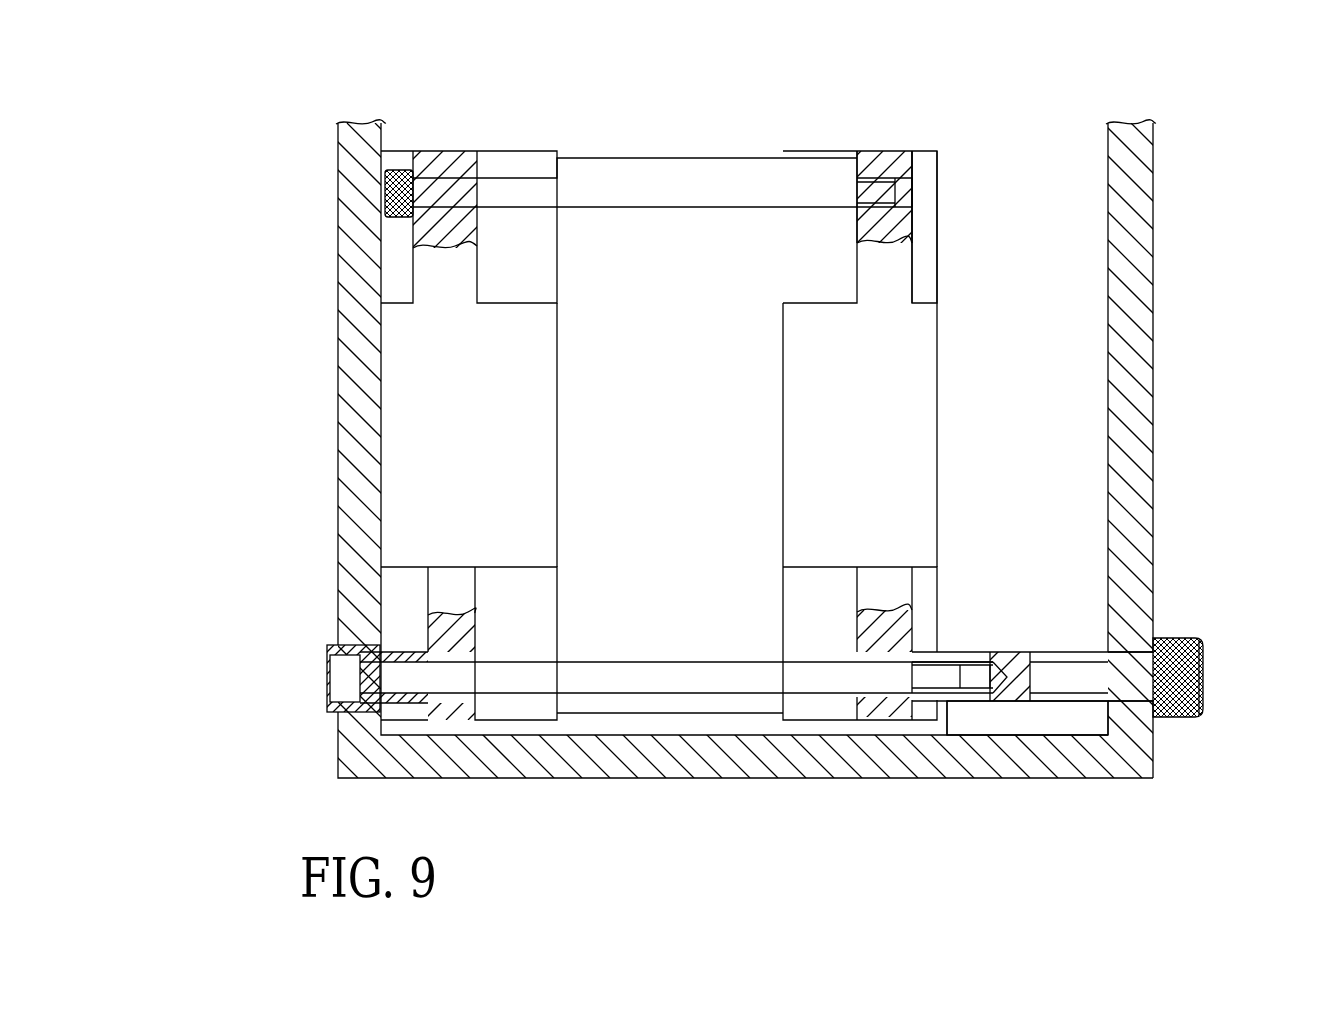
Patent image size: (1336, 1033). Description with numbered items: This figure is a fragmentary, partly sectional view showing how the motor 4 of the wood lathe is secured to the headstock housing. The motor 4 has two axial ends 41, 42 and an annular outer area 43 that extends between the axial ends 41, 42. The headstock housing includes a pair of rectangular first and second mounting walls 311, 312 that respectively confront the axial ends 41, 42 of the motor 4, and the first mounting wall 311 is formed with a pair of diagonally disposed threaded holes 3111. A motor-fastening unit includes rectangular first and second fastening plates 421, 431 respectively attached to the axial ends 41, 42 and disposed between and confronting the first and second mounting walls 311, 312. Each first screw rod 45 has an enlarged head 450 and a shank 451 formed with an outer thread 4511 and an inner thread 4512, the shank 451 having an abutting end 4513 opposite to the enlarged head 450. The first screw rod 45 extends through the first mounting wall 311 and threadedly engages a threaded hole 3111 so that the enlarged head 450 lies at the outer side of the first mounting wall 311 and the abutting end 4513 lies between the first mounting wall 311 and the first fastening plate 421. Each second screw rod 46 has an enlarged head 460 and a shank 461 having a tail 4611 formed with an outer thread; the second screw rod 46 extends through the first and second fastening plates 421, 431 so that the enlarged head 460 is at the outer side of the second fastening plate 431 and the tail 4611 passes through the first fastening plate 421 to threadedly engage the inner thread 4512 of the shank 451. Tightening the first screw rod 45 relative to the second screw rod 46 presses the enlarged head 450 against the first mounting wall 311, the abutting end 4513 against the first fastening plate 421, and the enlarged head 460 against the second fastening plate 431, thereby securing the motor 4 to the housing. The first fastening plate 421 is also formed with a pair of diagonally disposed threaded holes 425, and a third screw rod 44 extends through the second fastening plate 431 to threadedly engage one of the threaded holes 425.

The motor 4 is at (786, 370).
The axial end 41 is at (850, 287).
The axial end 42 is at (475, 290).
The annular outer area 43 is at (618, 638).
The third screw rod 44 is at (651, 186).
The first screw rod 45 is at (1092, 652).
The second screw rod 46 is at (668, 695).
The first mounting wall 311 is at (1150, 203).
The second mounting wall 312 is at (347, 156).
The threaded hole 3111 is at (1133, 652).
The first fastening plate 421 is at (888, 151).
The threaded hole 425 is at (870, 151).
The second fastening plate 431 is at (428, 151).
The enlarged head 450 is at (1183, 718).
The shank 451 is at (1068, 700).
The outer thread 4511 is at (1023, 652).
The inner thread 4512 is at (940, 690).
The abutting end 4513 is at (943, 652).
The enlarged head 460 is at (327, 673).
The shank 461 is at (735, 683).
The tail 4611 is at (957, 652).